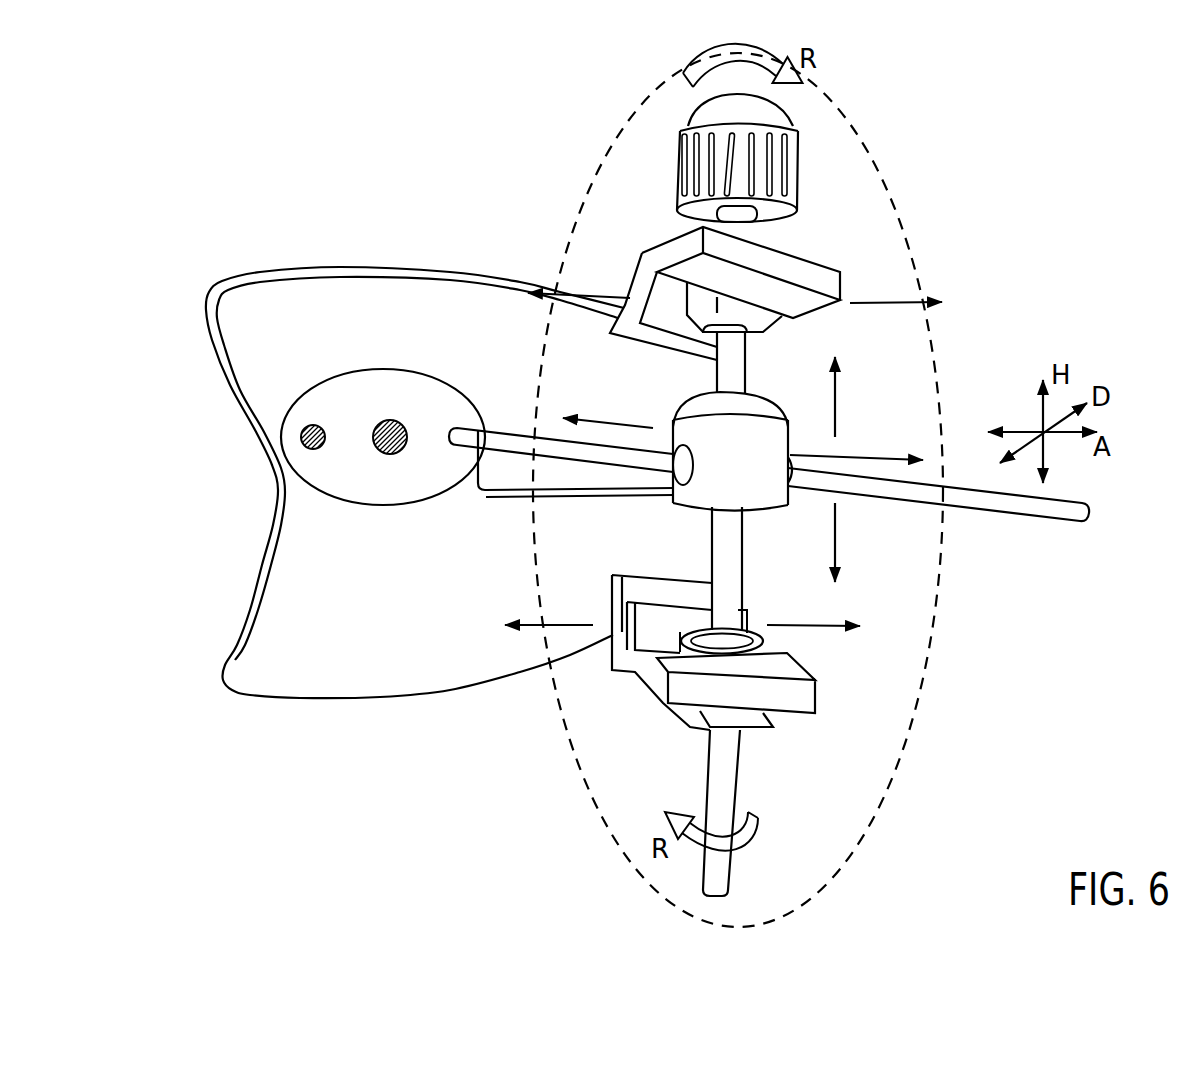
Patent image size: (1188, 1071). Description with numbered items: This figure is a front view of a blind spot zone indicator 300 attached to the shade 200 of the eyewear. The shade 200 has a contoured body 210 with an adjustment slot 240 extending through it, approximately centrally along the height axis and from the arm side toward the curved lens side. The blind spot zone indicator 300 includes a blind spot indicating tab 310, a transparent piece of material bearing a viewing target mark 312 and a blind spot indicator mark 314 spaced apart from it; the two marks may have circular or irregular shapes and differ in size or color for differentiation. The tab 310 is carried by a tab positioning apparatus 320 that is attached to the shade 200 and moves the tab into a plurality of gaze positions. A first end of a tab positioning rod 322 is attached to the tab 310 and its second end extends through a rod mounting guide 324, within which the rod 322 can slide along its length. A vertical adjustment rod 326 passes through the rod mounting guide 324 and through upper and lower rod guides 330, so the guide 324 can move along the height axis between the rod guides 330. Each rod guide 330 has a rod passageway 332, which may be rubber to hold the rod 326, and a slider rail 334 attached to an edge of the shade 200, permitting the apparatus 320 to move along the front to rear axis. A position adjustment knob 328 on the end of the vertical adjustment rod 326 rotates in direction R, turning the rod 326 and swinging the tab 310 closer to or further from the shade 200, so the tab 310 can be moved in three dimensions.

The shade 200 is at (378, 265).
The contoured body 210 is at (278, 677).
The adjustment slot 240 is at (570, 477).
The blind spot zone indicator 300 is at (514, 473).
The blind spot indicating tab 310 is at (327, 400).
The viewing target mark 312 is at (300, 437).
The blind spot indicator mark 314 is at (393, 430).
The tab positioning apparatus 320 is at (868, 820).
The tab positioning rod 322 is at (505, 428).
The rod mounting guide 324 is at (767, 483).
The vertical adjustment rod 326 is at (710, 782).
The position adjustment knob 328 is at (763, 160).
The rod guide 330 is at (804, 244).
The rod passageway 332 is at (748, 345).
The slider rail 334 is at (640, 278).